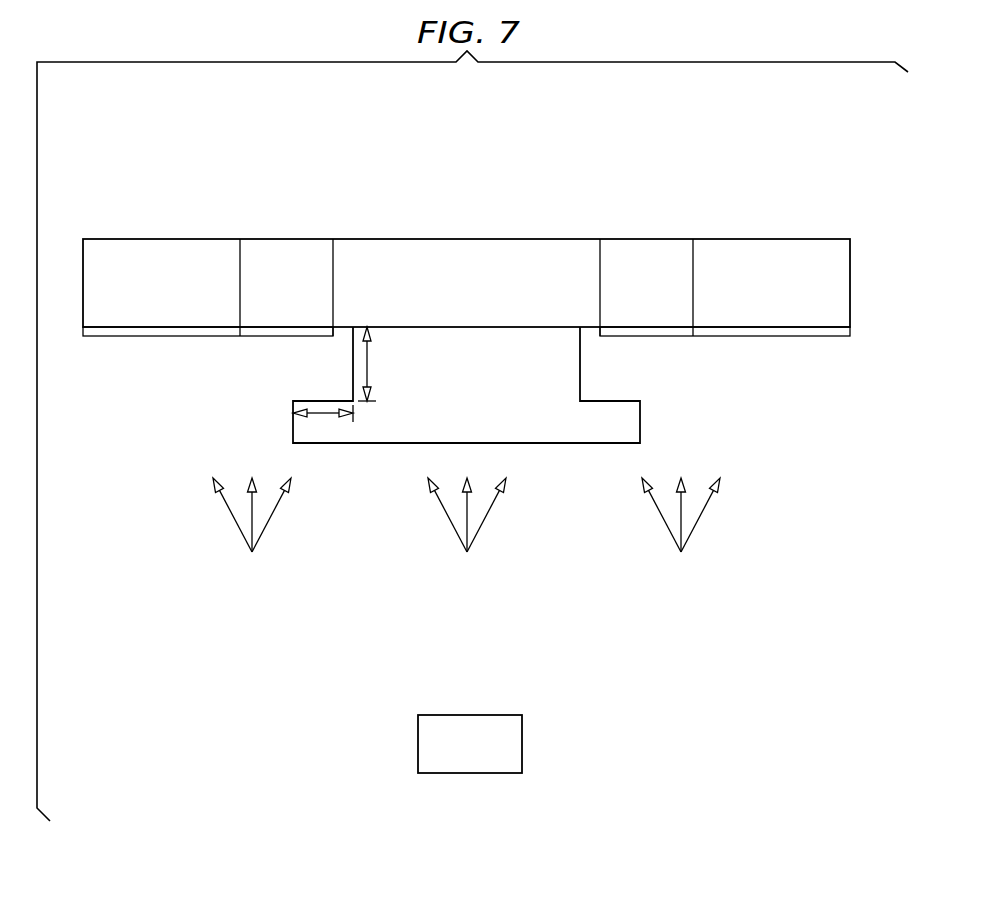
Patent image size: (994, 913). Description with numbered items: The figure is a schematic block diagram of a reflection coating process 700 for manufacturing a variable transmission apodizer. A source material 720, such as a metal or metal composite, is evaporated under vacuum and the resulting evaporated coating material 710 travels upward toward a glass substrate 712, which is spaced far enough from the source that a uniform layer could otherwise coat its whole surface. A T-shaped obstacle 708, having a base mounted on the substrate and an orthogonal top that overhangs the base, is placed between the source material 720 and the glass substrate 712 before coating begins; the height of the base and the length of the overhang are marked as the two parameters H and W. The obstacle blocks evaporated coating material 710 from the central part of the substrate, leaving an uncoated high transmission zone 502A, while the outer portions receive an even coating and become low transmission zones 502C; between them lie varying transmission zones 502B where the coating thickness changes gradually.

The process 700 is at (780, 122).
The glass substrate 712 is at (138, 239).
The high transmission zone 502A is at (560, 253).
The varying transmission zone 502B is at (277, 337).
The low transmission zone 502C is at (150, 337).
The T-shaped obstacle 708 is at (560, 443).
The evaporated coating material 710 is at (682, 600).
The source material 720 is at (522, 740).